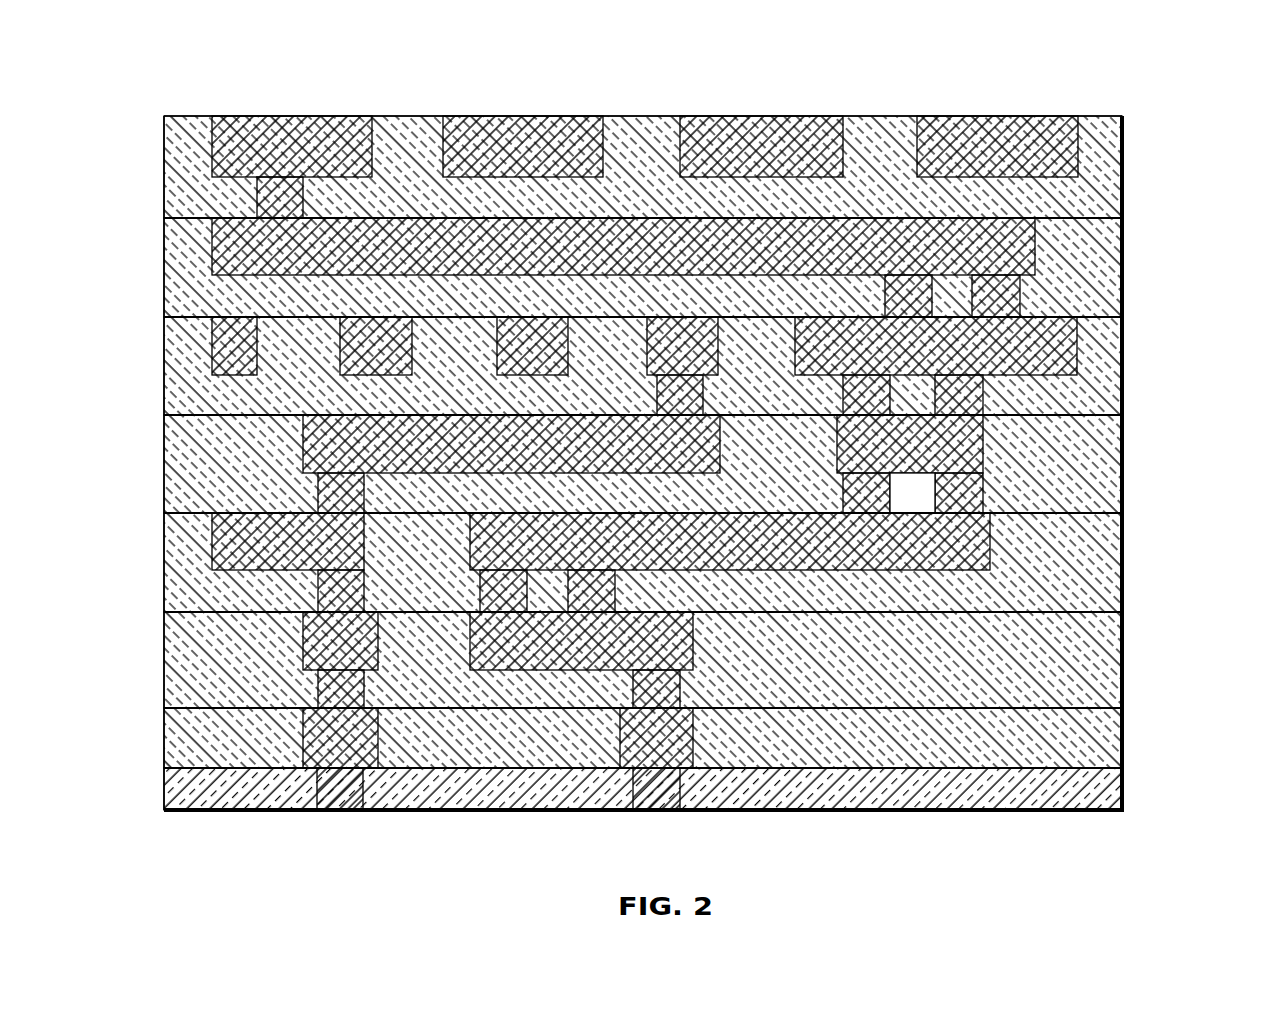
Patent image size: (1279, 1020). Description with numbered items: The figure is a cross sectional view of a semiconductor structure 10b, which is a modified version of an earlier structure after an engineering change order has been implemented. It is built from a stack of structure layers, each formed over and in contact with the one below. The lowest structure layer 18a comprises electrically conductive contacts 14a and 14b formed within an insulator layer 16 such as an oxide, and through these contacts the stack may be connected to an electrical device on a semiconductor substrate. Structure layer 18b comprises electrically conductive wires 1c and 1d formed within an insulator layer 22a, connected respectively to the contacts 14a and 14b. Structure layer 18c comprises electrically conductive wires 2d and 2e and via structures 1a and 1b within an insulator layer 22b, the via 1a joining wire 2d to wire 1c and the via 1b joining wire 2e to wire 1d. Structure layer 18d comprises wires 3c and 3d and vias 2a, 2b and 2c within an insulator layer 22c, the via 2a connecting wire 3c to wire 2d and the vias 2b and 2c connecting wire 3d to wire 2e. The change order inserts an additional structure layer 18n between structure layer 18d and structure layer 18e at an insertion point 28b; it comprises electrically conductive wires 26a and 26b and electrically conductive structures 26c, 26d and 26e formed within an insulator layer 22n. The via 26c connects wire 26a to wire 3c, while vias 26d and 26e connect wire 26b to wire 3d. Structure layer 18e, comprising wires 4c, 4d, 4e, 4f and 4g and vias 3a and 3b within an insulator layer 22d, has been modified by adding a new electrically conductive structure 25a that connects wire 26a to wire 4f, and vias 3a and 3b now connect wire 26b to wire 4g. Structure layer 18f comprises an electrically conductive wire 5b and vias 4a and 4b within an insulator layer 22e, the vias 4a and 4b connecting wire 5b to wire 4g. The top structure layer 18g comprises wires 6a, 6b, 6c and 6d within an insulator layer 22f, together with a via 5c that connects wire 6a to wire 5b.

The semiconductor structure 10b is at (677, 454).
The electrically conductive contact 14a is at (336, 812).
The electrically conductive contact 14b is at (659, 812).
The insulator layer 16 is at (975, 812).
The structure layer 18a is at (694, 819).
The structure layer 18b is at (658, 738).
The structure layer 18c is at (657, 660).
The structure layer 18d is at (657, 562).
The structure layer 18e is at (657, 366).
The structure layer 18f is at (658, 267).
The structure layer 18g is at (694, 137).
The additional structure layer 18n is at (660, 464).
The insertion point 28b is at (660, 464).
The insulator layer 22a is at (173, 747).
The insulator layer 22b is at (171, 692).
The insulator layer 22c is at (171, 594).
The insulator layer 22d is at (171, 399).
The insulator layer 22e is at (171, 296).
The insulator layer 22f is at (400, 117).
The insulator layer 22n is at (171, 488).
The electrically conductive structure 1a is at (351, 702).
The electrically conductive structure 1b is at (672, 702).
The electrically conductive wire 1c is at (352, 746).
The electrically conductive wire 1d is at (670, 746).
The electrically conductive structure 2a is at (351, 604).
The electrically conductive structure 2b is at (516, 604).
The electrically conductive structure 2c is at (604, 604).
The electrically conductive wire 2d is at (352, 648).
The electrically conductive wire 2e is at (579, 648).
The electrically conductive structure 3a is at (878, 406).
The electrically conductive structure 3b is at (969, 406).
The electrically conductive wire 3c is at (312, 554).
The electrically conductive wire 3d is at (754, 554).
The electrically conductive structure 4a is at (920, 310).
The electrically conductive structure 4b is at (1010, 310).
The electrically conductive wire 4c is at (245, 358).
The electrically conductive wire 4d is at (390, 358).
The electrically conductive wire 4e is at (547, 358).
The electrically conductive wire 4f is at (695, 358).
The electrically conductive wire 4g is at (930, 358).
The electrically conductive wire 5b is at (644, 256).
The via 5c is at (291, 208).
The electrically conductive wire 6a is at (301, 160).
The electrically conductive wire 6b is at (529, 160).
The electrically conductive wire 6c is at (773, 160).
The electrically conductive wire 6d is at (1008, 160).
The new electrically conductive structure 25a is at (703, 406).
The electrically conductive wire 26a is at (524, 458).
The electrically conductive wire 26b is at (930, 458).
The electrically conductive structure 26c is at (359, 506).
The electrically conductive structure 26d is at (885, 506).
The electrically conductive structure 26e is at (978, 506).